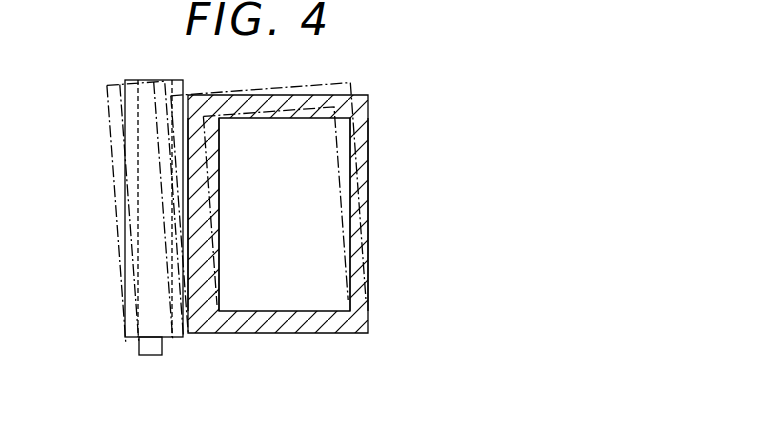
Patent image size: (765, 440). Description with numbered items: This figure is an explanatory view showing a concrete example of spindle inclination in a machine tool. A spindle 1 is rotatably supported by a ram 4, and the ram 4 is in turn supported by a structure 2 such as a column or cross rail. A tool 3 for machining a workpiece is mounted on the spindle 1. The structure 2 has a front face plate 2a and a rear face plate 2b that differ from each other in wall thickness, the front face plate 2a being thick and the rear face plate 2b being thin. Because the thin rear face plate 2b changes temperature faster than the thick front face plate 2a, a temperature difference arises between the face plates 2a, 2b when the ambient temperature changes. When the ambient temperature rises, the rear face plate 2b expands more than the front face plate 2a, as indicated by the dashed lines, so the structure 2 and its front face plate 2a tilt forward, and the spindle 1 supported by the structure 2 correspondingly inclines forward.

The spindle 1 is at (133, 176).
The structure 2 is at (370, 118).
The front face plate 2a is at (187, 214).
The rear face plate 2b is at (370, 219).
The tool 3 is at (149, 344).
The ram 4 is at (125, 124).